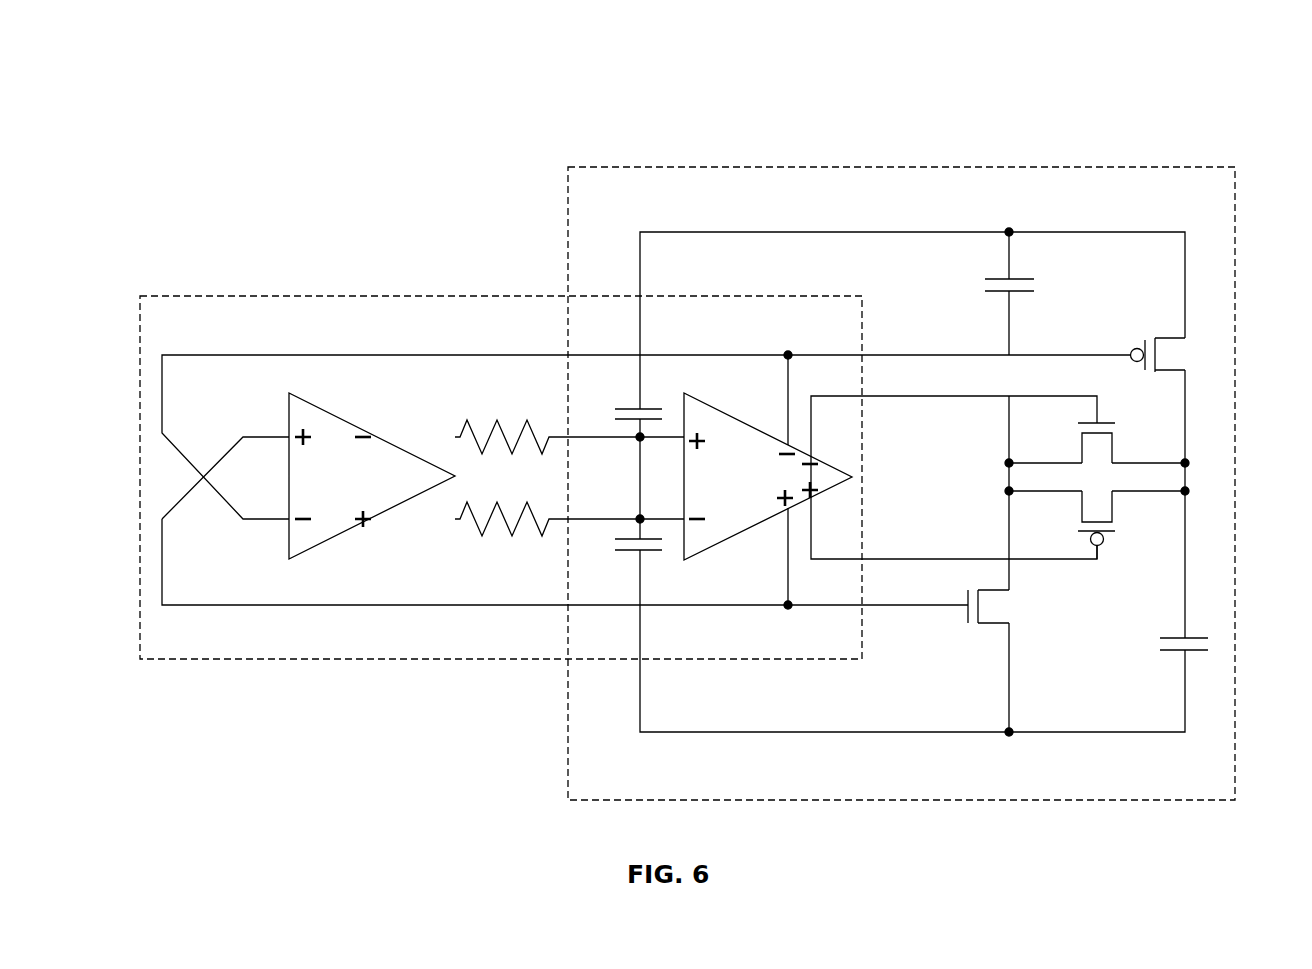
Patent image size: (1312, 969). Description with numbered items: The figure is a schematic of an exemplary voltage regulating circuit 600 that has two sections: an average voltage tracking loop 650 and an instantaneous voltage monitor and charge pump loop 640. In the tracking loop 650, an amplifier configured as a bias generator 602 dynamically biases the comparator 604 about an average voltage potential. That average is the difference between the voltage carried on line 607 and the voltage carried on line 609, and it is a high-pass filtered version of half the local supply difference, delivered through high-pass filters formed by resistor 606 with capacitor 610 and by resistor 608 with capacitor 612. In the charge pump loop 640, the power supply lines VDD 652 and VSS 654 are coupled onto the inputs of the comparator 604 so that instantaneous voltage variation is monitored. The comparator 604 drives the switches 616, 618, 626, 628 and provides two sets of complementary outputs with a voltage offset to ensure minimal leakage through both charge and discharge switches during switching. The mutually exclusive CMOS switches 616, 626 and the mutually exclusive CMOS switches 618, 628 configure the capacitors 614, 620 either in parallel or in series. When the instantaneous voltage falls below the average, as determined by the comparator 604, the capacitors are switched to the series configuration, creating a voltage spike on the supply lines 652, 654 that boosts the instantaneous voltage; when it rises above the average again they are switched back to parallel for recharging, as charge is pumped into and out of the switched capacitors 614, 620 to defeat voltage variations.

The voltage regulating circuit 600 is at (1167, 135).
The bias generator 602 is at (338, 409).
The comparator 604 is at (728, 410).
The resistor 606 is at (503, 423).
The line 607 is at (580, 438).
The resistor 608 is at (483, 537).
The line 609 is at (617, 517).
The capacitor 610 is at (628, 407).
The capacitor 612 is at (627, 552).
The capacitor 614 is at (995, 293).
The CMOS switch 616 is at (987, 623).
The CMOS switch 618 is at (1163, 337).
The capacitor 620 is at (1170, 650).
The CMOS switch 626 is at (1113, 442).
The CMOS switch 628 is at (1112, 512).
The instantaneous voltage monitor and charge pump loop 640 is at (643, 165).
The average voltage tracking loop 650 is at (313, 297).
The VDD power supply line 652 is at (715, 210).
The VSS power supply line 654 is at (708, 752).